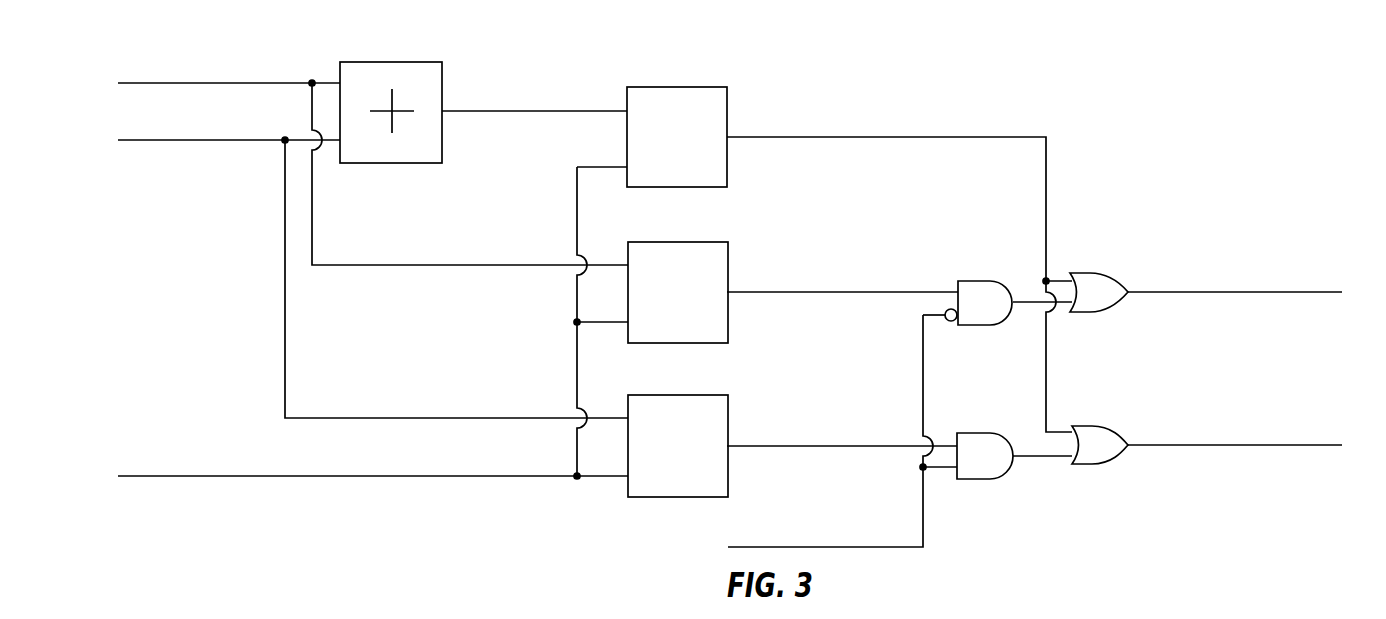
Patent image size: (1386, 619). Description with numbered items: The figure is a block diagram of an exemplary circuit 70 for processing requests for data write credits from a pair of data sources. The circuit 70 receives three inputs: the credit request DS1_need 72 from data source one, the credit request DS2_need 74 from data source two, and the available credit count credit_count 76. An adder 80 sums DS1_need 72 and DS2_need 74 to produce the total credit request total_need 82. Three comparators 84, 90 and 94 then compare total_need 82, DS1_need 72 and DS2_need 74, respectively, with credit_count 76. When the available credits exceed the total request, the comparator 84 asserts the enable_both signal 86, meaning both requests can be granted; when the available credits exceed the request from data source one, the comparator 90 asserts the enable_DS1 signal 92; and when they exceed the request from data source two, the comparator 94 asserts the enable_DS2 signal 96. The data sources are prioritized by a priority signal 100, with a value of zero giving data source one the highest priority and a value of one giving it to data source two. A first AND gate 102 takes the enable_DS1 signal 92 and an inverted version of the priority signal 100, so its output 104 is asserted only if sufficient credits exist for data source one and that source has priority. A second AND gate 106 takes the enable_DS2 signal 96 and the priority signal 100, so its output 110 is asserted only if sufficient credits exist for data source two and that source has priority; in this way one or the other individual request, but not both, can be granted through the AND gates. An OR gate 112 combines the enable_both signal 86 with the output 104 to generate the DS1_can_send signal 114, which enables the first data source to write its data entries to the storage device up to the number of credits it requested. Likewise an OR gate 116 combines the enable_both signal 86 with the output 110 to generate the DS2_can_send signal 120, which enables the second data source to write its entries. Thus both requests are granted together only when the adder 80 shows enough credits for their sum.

The circuit 70 is at (483, 48).
The DS1_need input 72 is at (133, 84).
The DS2_need input 74 is at (133, 141).
The credit_count input 76 is at (133, 477).
The adder 80 is at (392, 164).
The total_need 82 is at (545, 112).
The comparator 84 is at (680, 188).
The enable_both signal 86 is at (830, 138).
The comparator 90 is at (677, 344).
The enable_DS1 signal 92 is at (830, 293).
The comparator 94 is at (680, 498).
The enable_DS2 signal 96 is at (833, 447).
The priority signal 100 is at (855, 546).
The first AND gate 102 is at (990, 281).
The output of the first AND gate 104 is at (1037, 303).
The second AND gate 106 is at (988, 433).
The output of the second AND gate 110 is at (1035, 458).
The OR gate 112 is at (1089, 272).
The DS1_can_send signal 114 is at (1338, 292).
The OR gate 116 is at (1091, 425).
The DS2_can_send signal 120 is at (1338, 445).